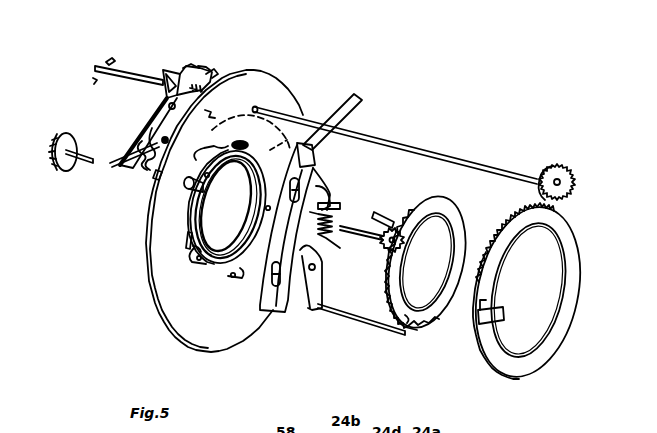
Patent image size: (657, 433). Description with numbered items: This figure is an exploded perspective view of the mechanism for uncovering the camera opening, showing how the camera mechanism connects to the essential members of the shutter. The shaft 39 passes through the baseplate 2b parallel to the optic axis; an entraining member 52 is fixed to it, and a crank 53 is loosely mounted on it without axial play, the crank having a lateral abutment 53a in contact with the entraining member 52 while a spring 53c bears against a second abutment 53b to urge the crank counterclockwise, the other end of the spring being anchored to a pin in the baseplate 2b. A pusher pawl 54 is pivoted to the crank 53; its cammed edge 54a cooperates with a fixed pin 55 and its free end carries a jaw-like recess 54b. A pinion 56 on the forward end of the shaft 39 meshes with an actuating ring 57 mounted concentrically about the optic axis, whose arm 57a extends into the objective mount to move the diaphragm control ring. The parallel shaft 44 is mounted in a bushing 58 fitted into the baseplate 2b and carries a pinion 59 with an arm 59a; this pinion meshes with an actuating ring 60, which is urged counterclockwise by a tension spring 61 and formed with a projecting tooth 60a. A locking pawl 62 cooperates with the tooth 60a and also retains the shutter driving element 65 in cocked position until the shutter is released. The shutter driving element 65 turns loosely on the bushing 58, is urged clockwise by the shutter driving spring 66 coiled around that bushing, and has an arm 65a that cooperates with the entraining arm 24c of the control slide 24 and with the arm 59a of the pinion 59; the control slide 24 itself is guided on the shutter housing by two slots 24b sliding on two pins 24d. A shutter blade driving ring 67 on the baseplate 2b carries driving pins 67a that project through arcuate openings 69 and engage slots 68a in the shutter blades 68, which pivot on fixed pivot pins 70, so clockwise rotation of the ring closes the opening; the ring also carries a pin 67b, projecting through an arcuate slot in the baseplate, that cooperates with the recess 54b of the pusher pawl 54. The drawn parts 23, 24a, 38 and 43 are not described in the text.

The baseplate 2b is at (175, 320).
The lever 23 is at (353, 95).
The control slide 24 is at (278, 308).
The plate bracket 24a is at (323, 147).
The slots 24b is at (277, 262).
The entraining arm 24c is at (328, 193).
The pins 24d is at (312, 153).
The pin 38 is at (105, 52).
The shaft 39 is at (134, 78).
The knob 43 is at (63, 167).
The shaft 44 is at (85, 167).
The entraining member 52 is at (165, 72).
The crank 53 is at (167, 98).
The lateral abutment 53a is at (176, 72).
The second abutment 53b is at (210, 77).
The spring 53c is at (207, 68).
The pusher pawl 54 is at (137, 143).
The cammed edge 54a is at (140, 142).
The jaw-like recess 54b is at (135, 147).
The fixed pin 55 is at (158, 172).
The pinion 56 is at (565, 175).
The actuating ring 57 is at (580, 237).
The arm 57a is at (497, 313).
The bushing 58 is at (192, 192).
The pinion 59 is at (388, 255).
The arm 59a is at (390, 215).
The actuating ring 60 is at (455, 217).
The projecting tooth 60a is at (397, 323).
The tension spring 61 is at (438, 323).
The locking pawl 62 is at (308, 308).
The shutter driving element 65 is at (320, 250).
The arm 65a is at (340, 207).
The shutter driving spring 66 is at (340, 234).
The shutter blade driving ring 67 is at (200, 268).
The driving pins 67a is at (196, 250).
The pin 67b is at (150, 165).
The shutter blade 68 is at (277, 147).
The slot 68a is at (230, 127).
The arcuate openings 69 is at (190, 238).
The fixed pivot pins 70 is at (233, 166).